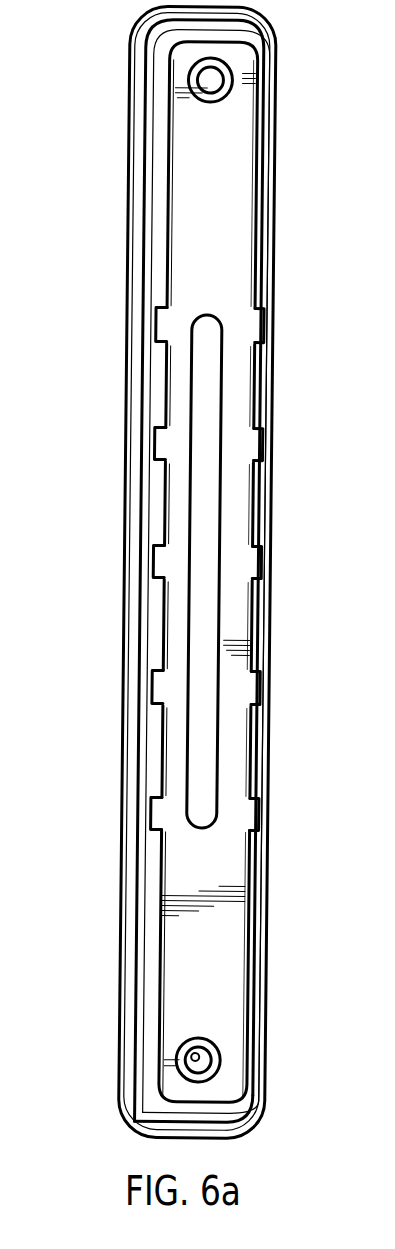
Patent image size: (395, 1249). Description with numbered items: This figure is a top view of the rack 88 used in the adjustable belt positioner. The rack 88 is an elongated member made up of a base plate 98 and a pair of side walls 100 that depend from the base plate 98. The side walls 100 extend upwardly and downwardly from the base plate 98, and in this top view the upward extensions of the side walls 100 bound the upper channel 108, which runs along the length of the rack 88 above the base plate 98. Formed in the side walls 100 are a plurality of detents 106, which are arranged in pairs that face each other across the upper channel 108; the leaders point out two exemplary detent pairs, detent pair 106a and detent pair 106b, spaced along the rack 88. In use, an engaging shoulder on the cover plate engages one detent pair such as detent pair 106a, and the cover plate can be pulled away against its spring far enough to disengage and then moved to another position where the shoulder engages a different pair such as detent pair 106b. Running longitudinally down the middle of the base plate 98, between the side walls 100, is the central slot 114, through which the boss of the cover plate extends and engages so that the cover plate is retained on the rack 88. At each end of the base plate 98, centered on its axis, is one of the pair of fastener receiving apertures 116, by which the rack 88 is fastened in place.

The rack 88 is at (274, 215).
The base plate 98 is at (233, 920).
The side walls 100 is at (267, 788).
The detents 106 is at (252, 676).
The detent pair 106a is at (250, 328).
The detent pair 106b is at (243, 445).
The upper channel 108 is at (230, 978).
The central slot 114 is at (217, 628).
The fastener receiving apertures 116 is at (212, 88).